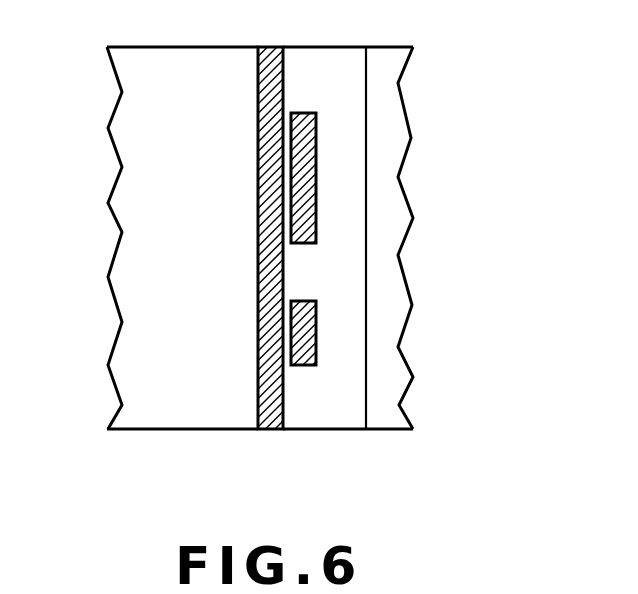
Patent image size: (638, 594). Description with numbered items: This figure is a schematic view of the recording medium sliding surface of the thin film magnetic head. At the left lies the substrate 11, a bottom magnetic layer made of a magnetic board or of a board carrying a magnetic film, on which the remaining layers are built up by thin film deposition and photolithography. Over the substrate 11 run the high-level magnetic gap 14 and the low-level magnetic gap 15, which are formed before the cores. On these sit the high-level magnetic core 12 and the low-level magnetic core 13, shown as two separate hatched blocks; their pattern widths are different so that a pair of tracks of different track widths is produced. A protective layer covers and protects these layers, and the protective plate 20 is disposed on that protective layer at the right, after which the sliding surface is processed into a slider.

The substrate 11 is at (187, 410).
The high-level magnetic core 12 is at (316, 329).
The low-level magnetic core 13 is at (316, 195).
The high-level magnetic gap 14 is at (283, 338).
The low-level magnetic gap 15 is at (283, 158).
The protective plate 20 is at (395, 389).